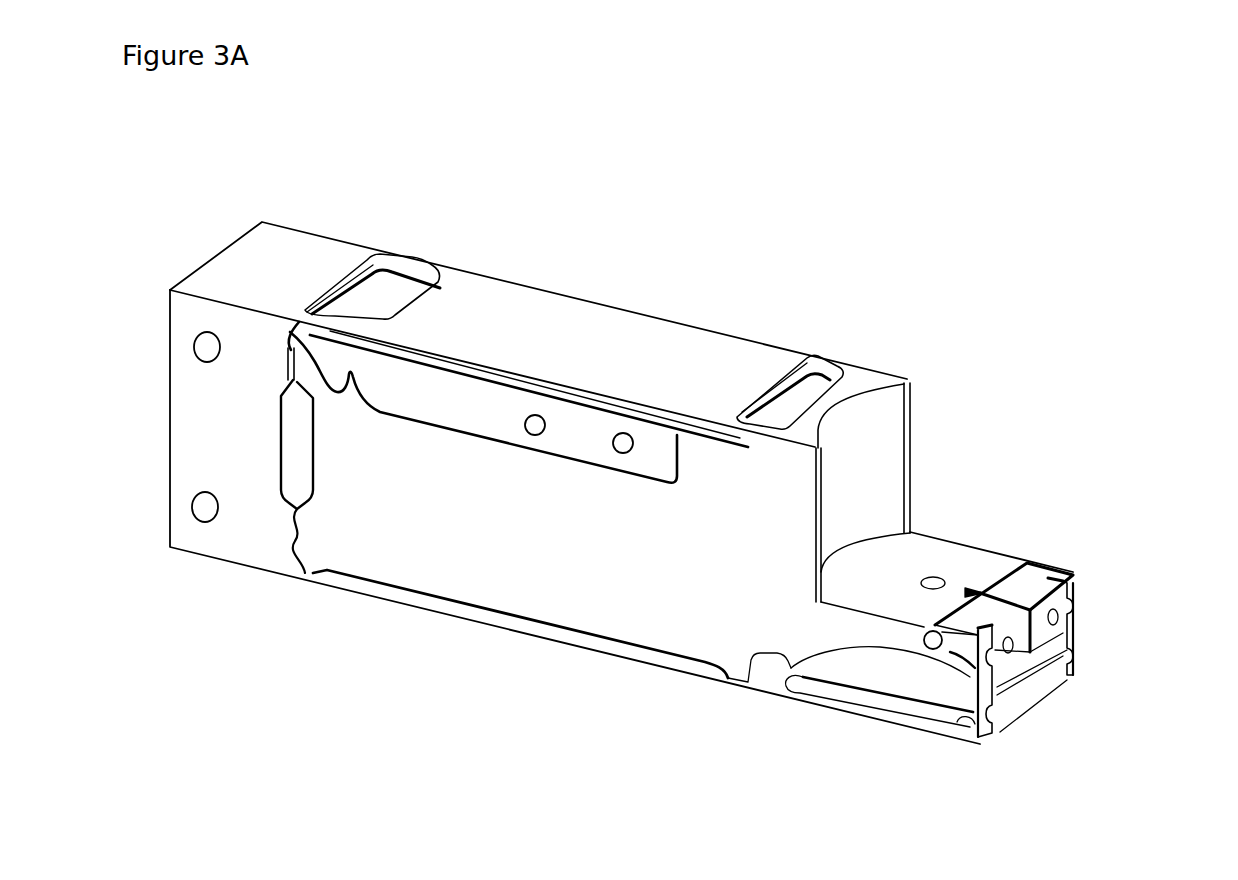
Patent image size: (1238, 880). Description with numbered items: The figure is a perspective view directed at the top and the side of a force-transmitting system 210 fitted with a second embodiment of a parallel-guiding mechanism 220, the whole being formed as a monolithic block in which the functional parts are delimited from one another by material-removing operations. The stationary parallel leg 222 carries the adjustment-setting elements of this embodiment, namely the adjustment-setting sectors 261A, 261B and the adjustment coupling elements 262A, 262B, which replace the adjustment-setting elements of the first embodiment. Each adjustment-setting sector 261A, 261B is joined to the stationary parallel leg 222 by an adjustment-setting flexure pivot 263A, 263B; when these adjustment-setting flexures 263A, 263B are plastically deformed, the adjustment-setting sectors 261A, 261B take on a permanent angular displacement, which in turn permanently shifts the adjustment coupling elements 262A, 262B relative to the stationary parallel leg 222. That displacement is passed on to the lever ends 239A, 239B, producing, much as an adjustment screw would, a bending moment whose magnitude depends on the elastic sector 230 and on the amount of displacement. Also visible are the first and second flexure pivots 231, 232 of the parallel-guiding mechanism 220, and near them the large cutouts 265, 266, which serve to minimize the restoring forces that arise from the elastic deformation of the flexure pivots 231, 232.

The force-transmitting system 210 is at (463, 652).
The parallel-guiding mechanism 220 is at (572, 338).
The stationary parallel leg 222 is at (655, 580).
The elastic sector 230 is at (849, 714).
The first flexure pivot 231 is at (385, 260).
The second flexure pivot 232 is at (820, 370).
The lever end 239A is at (980, 730).
The lever end 239B is at (1066, 668).
The adjustment-setting sector 261A is at (1040, 645).
The adjustment-setting sector 261B is at (1050, 600).
The adjustment coupling element 262A is at (976, 690).
The adjustment coupling element 262B is at (1012, 634).
The adjustment-setting flexure pivot 263A is at (930, 652).
The adjustment-setting flexure pivot 263B is at (1036, 552).
The large cutout 265 is at (367, 310).
The large cutout 266 is at (777, 382).